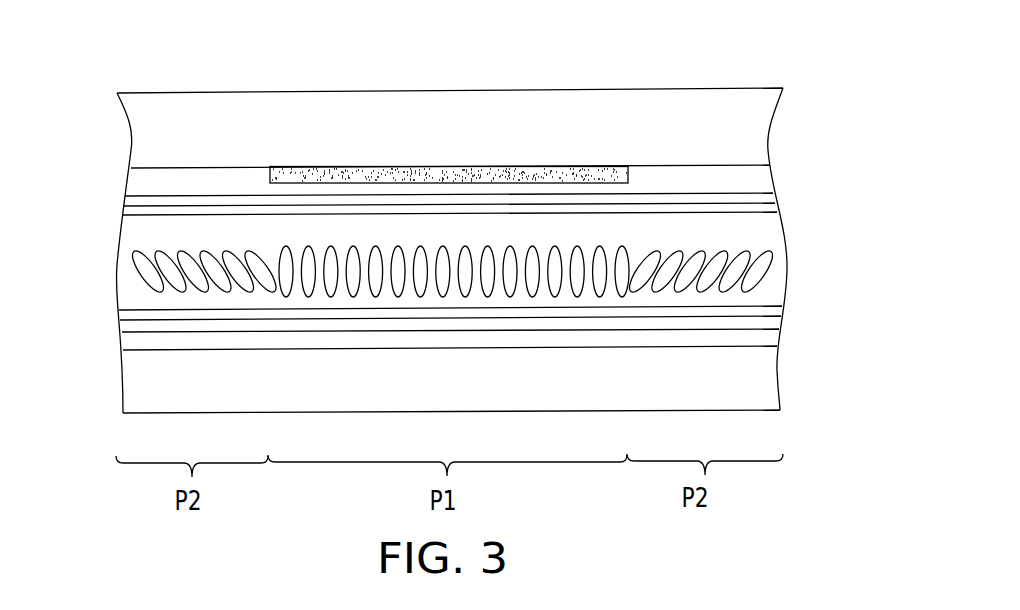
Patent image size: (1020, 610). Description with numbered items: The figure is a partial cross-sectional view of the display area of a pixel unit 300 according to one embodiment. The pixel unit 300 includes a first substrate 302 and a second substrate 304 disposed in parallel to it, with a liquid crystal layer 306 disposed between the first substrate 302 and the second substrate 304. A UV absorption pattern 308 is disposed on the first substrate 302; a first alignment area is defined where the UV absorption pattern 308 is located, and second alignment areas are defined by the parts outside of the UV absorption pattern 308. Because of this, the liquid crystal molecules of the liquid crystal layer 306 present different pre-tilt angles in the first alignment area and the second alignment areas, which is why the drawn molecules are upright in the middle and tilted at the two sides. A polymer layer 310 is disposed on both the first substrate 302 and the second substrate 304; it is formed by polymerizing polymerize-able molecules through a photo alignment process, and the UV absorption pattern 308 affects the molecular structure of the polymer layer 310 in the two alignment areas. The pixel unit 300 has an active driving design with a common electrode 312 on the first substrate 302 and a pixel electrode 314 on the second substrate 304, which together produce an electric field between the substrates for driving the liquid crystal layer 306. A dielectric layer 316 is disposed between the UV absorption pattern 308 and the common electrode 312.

The pixel unit 300 is at (781, 568).
The first substrate 302 is at (713, 85).
The second substrate 304 is at (753, 411).
The liquid crystal layer 306 is at (135, 288).
The UV absorption pattern 308 is at (292, 173).
The polymer layer 310 is at (770, 206).
The common electrode 312 is at (765, 198).
The pixel electrode 314 is at (770, 319).
The dielectric layer 316 is at (755, 177).